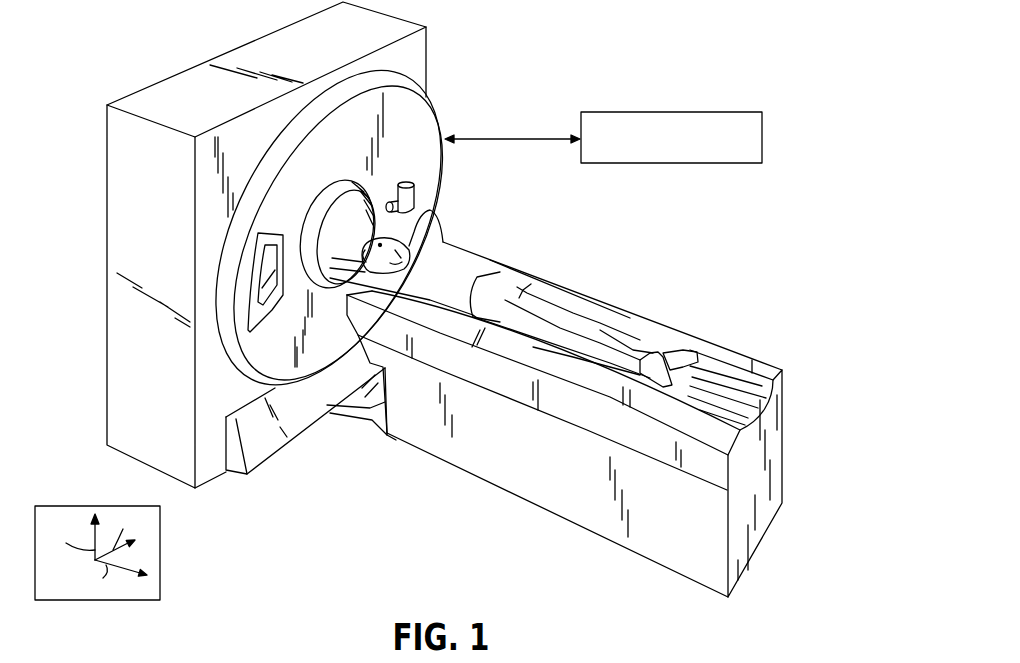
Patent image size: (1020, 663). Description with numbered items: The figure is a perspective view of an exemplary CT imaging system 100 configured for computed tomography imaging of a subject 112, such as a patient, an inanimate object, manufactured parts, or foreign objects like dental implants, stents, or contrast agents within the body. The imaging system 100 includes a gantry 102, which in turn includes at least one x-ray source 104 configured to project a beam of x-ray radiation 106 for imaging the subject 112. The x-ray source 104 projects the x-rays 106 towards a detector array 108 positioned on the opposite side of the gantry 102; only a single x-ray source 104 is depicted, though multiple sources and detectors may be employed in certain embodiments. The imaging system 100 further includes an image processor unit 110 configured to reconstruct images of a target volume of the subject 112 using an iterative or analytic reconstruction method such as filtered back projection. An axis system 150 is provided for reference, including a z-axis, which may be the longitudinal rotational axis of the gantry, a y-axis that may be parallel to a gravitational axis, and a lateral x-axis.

The CT imaging system 100 is at (706, 41).
The gantry 102 is at (423, 146).
The x-ray source 104 is at (415, 200).
The beam of x-ray radiation 106 is at (313, 248).
The detector array 108 is at (268, 307).
The image processor unit 110 is at (722, 112).
The subject 112 is at (453, 263).
The axis system 150 is at (49, 491).